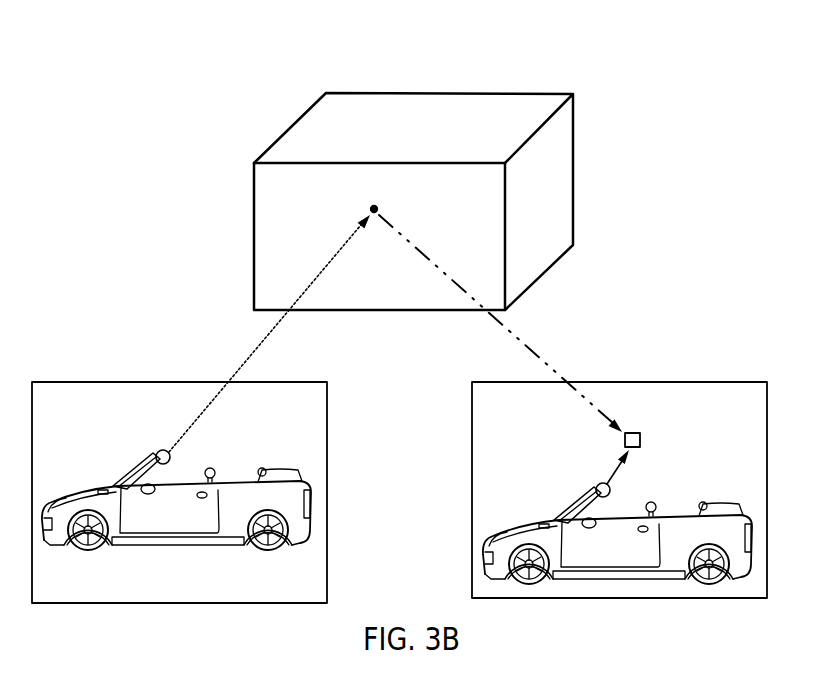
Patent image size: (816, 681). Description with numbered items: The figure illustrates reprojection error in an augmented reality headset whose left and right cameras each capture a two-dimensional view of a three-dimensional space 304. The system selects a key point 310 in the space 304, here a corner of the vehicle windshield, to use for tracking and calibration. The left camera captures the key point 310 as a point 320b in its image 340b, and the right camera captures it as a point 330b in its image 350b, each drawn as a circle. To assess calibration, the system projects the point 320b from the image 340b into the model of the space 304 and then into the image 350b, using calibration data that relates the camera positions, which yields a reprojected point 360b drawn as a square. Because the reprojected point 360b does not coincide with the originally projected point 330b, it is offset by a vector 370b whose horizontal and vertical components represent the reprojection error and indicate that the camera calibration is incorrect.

The three-dimensional space 304 is at (267, 147).
The key point 310 is at (377, 210).
The point 320b is at (171, 455).
The point 330b is at (597, 485).
The image 340b is at (134, 381).
The image 350b is at (681, 381).
The reprojected point 360b is at (641, 439).
The vector 370b is at (618, 470).